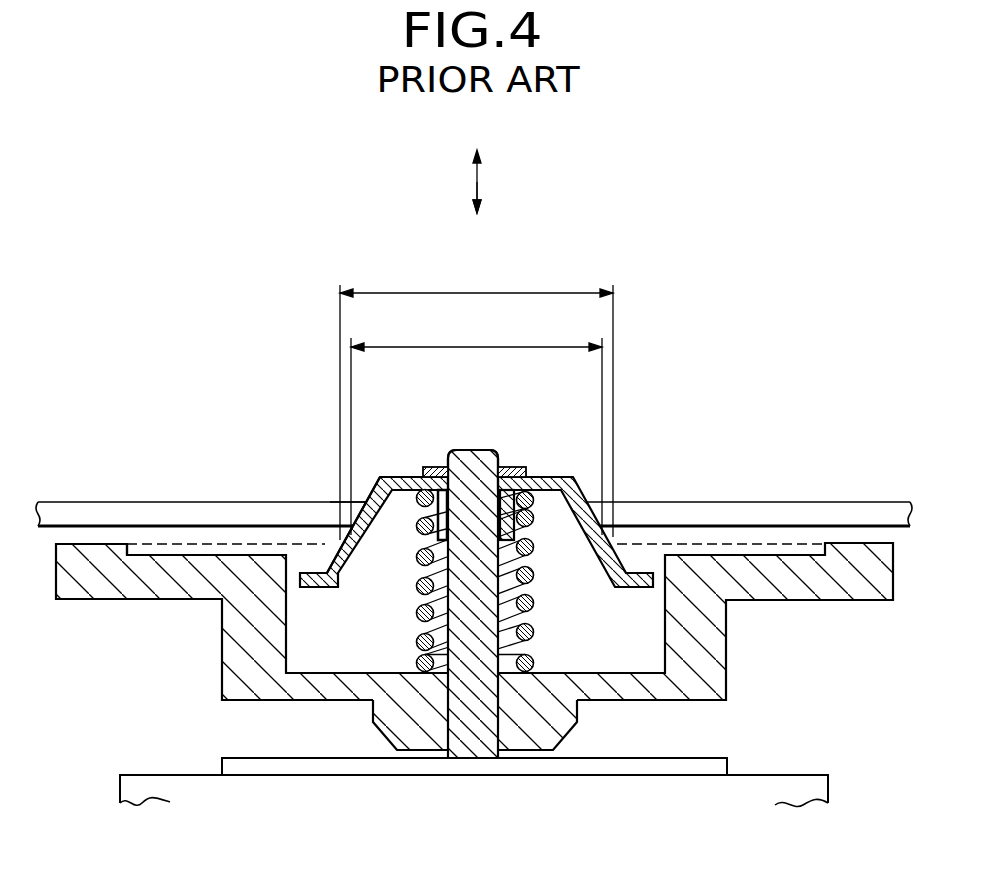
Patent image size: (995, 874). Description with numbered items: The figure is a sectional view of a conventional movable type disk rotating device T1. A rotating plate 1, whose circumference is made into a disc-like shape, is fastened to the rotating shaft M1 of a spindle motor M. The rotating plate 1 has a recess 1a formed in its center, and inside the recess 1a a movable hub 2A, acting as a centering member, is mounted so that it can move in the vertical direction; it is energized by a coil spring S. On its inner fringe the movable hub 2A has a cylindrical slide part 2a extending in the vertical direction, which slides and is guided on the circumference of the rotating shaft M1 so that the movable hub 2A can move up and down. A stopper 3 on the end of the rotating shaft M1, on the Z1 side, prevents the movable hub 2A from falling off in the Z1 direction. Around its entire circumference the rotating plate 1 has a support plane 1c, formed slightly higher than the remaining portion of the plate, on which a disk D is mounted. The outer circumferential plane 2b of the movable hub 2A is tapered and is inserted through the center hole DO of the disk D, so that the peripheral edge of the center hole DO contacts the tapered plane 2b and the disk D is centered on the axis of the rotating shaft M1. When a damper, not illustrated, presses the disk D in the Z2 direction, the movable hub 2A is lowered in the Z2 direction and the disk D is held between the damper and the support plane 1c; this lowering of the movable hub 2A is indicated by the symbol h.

The rotating plate 1 is at (474, 602).
The recess 1a is at (332, 655).
The support plane 1c is at (92, 543).
The cylindrical slide part 2a is at (437, 502).
The tapered outer circumferential plane 2b is at (368, 478).
The movable hub 2A is at (476, 491).
The stopper 3 is at (438, 467).
The disk D is at (177, 510).
The center hole DO is at (358, 502).
The coil spring S is at (530, 627).
The movable type disk rotating device T1 is at (474, 600).
The lowering of the movable hub h is at (717, 570).
The spindle motor M is at (771, 788).
The rotating shaft M1 is at (480, 722).
The Z1 direction Z1 is at (479, 167).
The Z2 direction Z2 is at (479, 218).